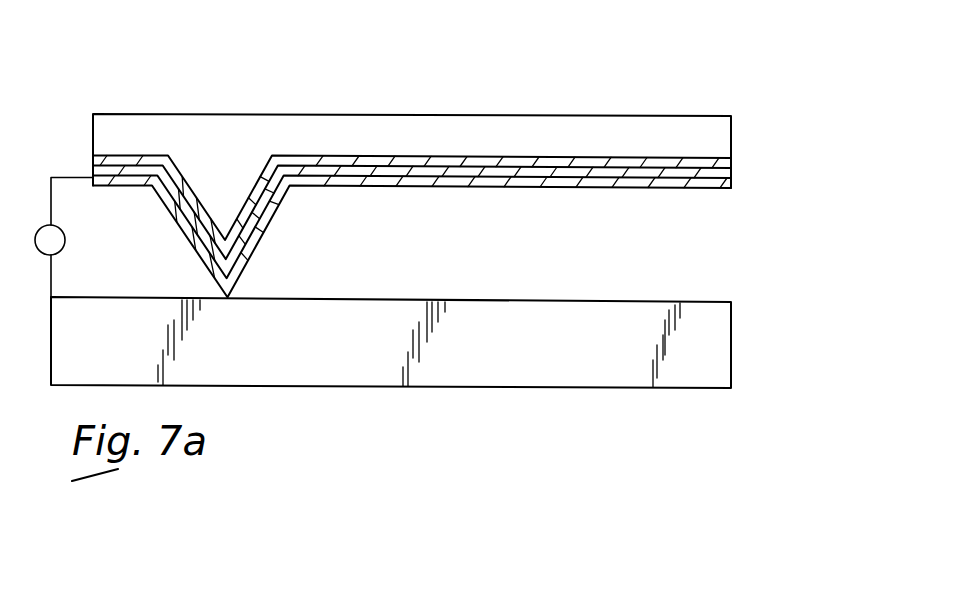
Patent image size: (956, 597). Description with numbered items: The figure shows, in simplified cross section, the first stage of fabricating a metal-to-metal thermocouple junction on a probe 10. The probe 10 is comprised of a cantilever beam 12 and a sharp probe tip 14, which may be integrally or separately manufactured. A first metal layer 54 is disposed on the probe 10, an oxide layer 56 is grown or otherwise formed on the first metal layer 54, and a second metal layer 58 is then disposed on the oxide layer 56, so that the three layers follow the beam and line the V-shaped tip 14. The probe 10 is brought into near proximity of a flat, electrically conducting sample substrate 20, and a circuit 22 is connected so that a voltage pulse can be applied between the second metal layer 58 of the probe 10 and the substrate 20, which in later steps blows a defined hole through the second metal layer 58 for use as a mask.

The probe 10 is at (511, 90).
The cantilever beam 12 is at (703, 140).
The probe tip 14 is at (226, 215).
The sample substrate 20 is at (718, 322).
The circuit 22 is at (66, 233).
The first metal layer 54 is at (733, 158).
The oxide layer 56 is at (735, 172).
The second metal layer 58 is at (712, 190).